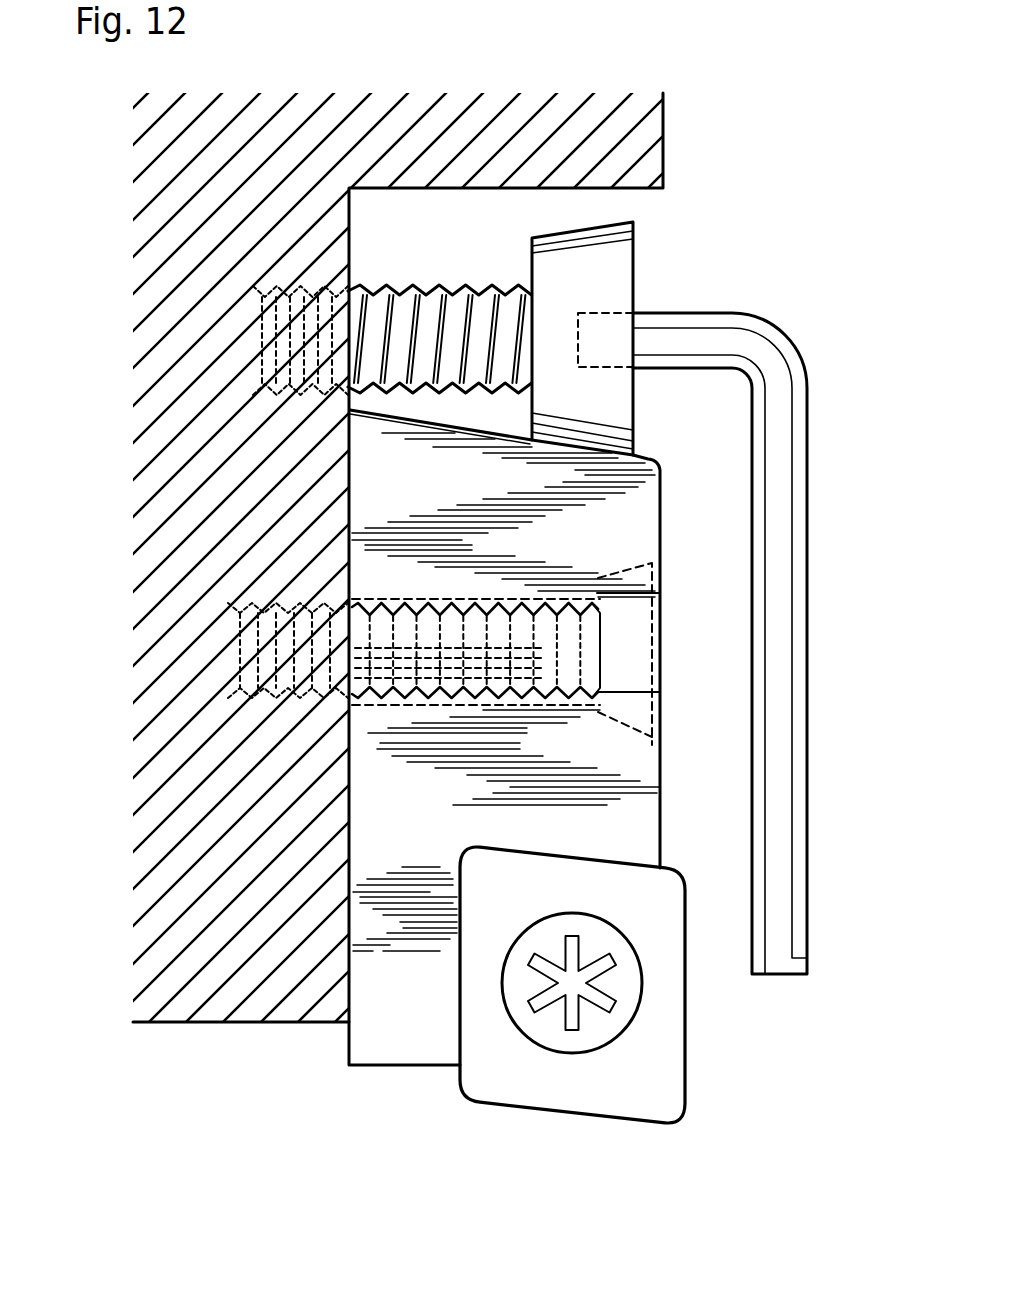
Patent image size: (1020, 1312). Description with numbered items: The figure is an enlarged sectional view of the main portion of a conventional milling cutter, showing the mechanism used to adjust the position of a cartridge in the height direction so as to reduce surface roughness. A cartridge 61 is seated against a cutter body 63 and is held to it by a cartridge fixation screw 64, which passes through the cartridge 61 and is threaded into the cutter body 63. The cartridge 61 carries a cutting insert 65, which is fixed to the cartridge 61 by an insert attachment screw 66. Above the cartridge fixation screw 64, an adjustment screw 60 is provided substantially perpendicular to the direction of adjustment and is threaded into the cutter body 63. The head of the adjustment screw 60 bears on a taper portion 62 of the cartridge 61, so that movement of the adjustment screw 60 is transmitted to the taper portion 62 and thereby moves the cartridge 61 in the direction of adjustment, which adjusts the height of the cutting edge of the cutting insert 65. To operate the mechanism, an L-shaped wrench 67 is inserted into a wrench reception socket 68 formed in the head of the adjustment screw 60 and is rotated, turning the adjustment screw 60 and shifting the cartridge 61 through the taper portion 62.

The adjustment screw 60 is at (617, 262).
The cartridge 61 is at (409, 1047).
The taper portion 62 is at (643, 457).
The cutter body 63 is at (633, 150).
The cartridge fixation screw 64 is at (228, 650).
The cutting insert 65 is at (665, 1052).
The insert attachment screw 66 is at (553, 1035).
The L-shaped wrench 67 is at (787, 593).
The wrench reception socket 68 is at (607, 313).